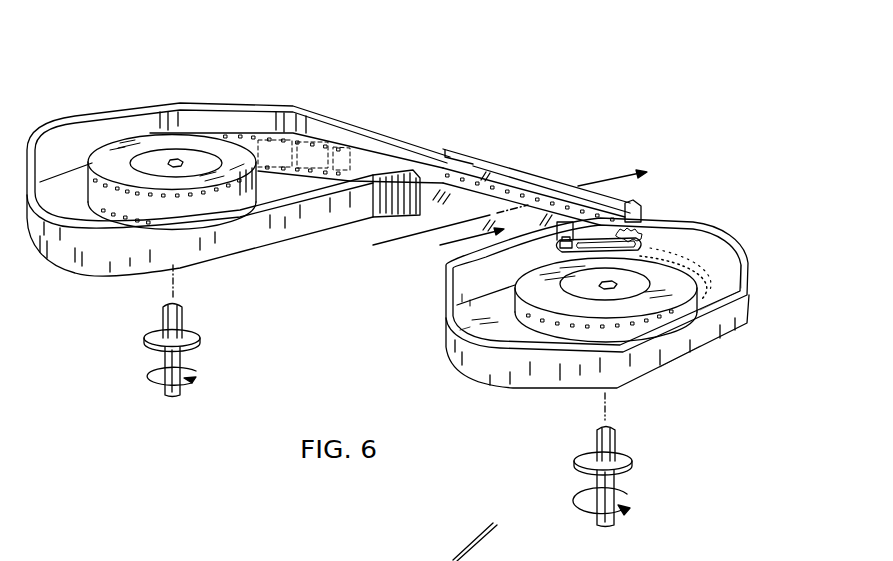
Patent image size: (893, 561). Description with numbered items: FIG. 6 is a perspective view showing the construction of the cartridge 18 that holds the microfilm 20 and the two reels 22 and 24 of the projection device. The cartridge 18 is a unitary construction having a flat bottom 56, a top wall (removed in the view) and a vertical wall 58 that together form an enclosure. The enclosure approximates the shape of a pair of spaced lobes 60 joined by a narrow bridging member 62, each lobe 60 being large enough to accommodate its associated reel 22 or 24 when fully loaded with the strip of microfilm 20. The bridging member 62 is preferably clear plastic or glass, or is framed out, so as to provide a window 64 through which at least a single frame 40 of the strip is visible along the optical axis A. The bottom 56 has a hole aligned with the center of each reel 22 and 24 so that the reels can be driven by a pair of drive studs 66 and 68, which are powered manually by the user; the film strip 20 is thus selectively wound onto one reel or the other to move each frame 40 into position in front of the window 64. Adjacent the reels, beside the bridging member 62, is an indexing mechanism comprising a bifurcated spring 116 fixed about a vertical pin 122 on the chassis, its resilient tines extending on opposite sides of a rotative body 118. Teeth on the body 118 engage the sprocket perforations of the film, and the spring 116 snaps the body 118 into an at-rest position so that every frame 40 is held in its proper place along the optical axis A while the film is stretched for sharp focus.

The cartridge 18 is at (745, 253).
The microfilm 20 is at (746, 290).
The reel 22 is at (155, 158).
The reel 24 is at (582, 300).
The frame 40 is at (663, 250).
The flat bottom 56 is at (717, 305).
The vertical wall 58 is at (697, 353).
The lobe 60 is at (481, 319).
The bridging member 62 is at (517, 170).
The window 64 is at (450, 238).
The drive stud 66 is at (200, 338).
The drive stud 68 is at (632, 462).
The spring 116 is at (598, 240).
The rotative body 118 is at (638, 230).
The vertical pin 122 is at (566, 236).
The optical axis A is at (390, 245).